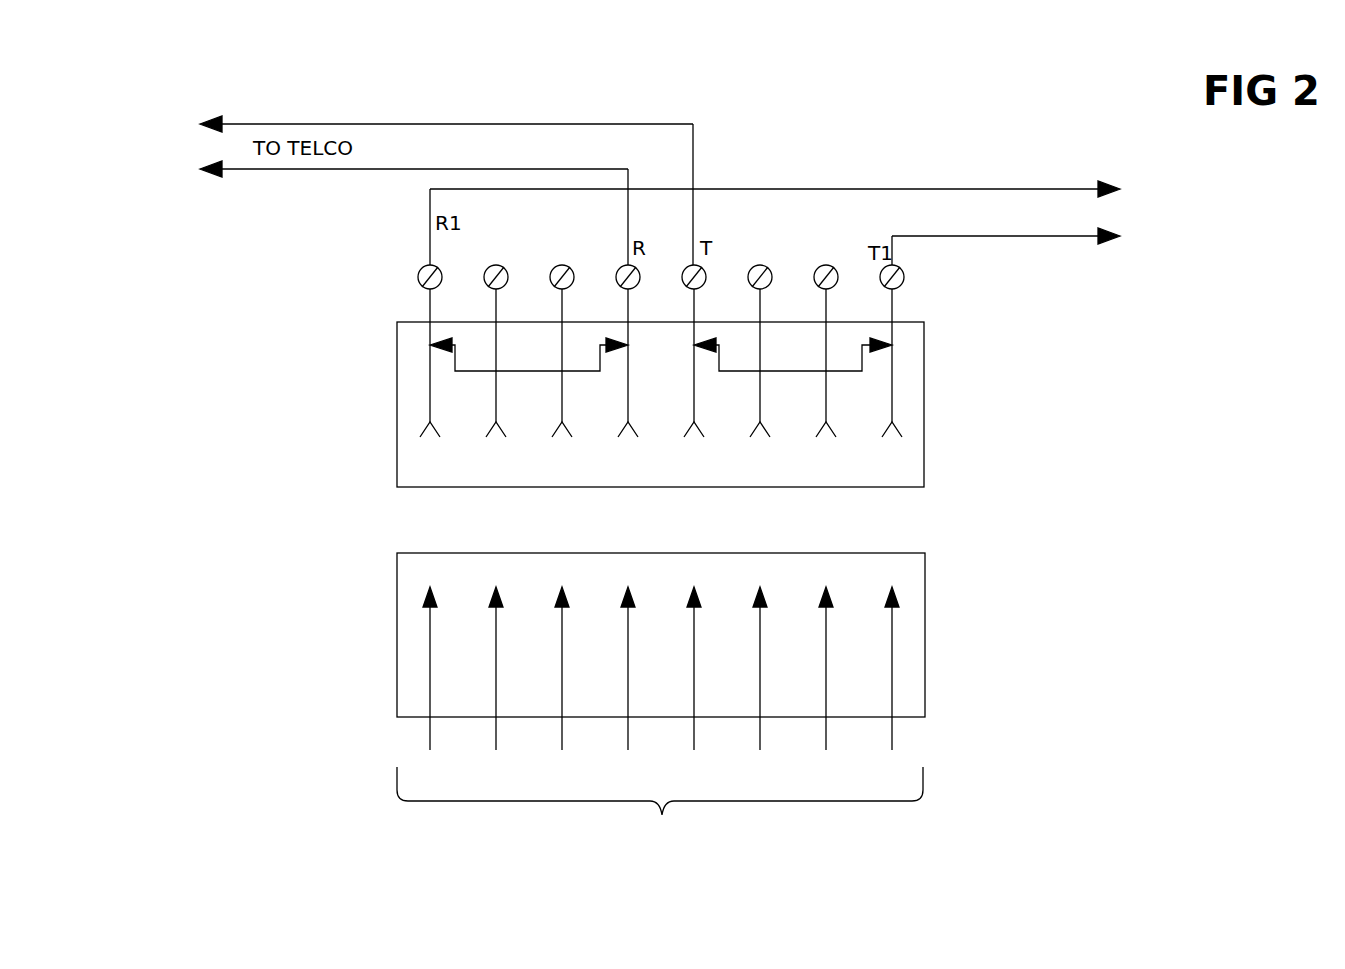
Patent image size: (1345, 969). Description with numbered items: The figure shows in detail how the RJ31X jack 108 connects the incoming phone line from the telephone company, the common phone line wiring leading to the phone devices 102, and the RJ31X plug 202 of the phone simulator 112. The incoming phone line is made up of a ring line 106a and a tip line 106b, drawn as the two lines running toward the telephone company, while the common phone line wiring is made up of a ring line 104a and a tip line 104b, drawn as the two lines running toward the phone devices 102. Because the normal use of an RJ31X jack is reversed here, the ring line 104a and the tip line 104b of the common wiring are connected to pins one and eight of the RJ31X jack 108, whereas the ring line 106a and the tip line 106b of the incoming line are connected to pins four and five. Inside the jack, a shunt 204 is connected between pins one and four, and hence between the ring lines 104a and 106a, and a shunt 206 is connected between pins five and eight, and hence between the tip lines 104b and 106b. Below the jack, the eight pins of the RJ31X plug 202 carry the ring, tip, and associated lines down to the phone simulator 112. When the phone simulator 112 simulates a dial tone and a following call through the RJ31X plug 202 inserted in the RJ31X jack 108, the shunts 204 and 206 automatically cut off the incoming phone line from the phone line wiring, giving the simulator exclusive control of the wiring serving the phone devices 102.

The phone devices 102 is at (1006, 215).
The ring line 104a is at (1035, 189).
The tip line 104b is at (1030, 236).
The ring line 106a is at (353, 169).
The tip line 106b is at (446, 124).
The RJ31X jack 108 is at (925, 463).
The phone simulator 112 is at (660, 815).
The RJ31X plug 202 is at (925, 685).
The shunt 204 is at (538, 371).
The shunt 206 is at (808, 371).